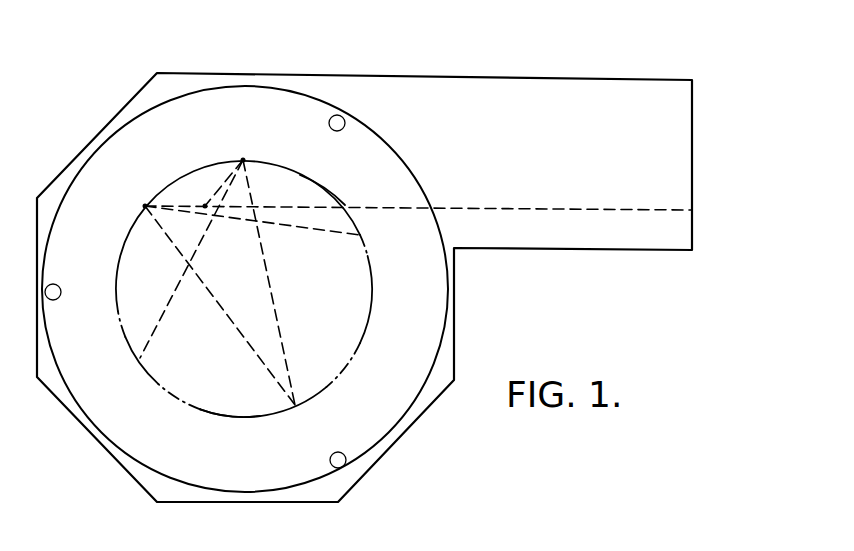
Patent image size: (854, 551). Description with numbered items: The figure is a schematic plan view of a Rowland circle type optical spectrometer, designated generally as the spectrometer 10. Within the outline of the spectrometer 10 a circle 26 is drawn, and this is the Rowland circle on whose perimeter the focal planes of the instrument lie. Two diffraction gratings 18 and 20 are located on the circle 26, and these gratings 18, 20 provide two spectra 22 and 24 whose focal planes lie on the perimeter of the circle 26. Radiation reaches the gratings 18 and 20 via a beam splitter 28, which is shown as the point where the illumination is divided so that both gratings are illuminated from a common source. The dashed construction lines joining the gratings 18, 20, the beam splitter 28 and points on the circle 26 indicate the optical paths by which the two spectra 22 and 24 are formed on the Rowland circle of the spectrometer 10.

The spectrometer 10 is at (612, 10).
The diffraction grating 18 is at (145, 206).
The diffraction grating 20 is at (243, 160).
The spectrum 22 is at (362, 340).
The spectrum 24 is at (227, 418).
The circle 26 is at (325, 188).
The beam splitter 28 is at (205, 206).